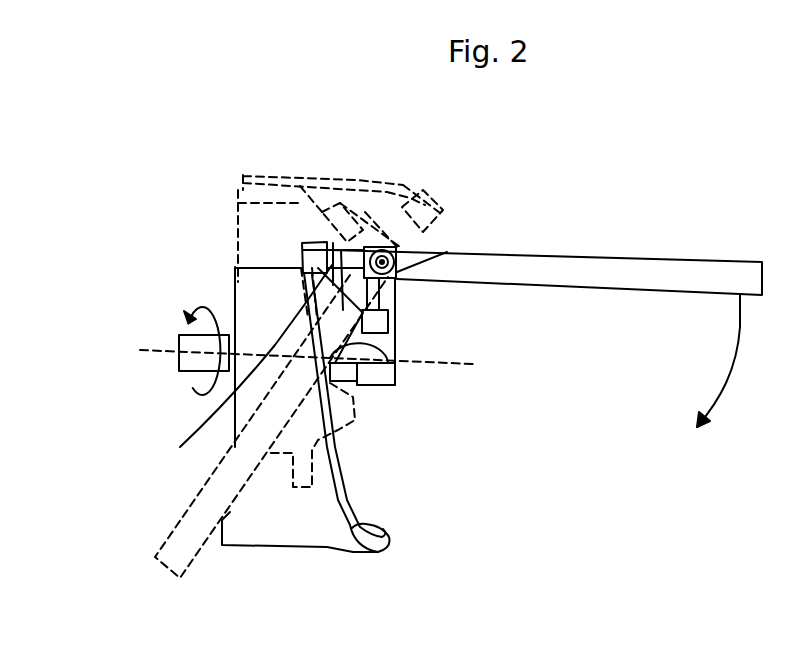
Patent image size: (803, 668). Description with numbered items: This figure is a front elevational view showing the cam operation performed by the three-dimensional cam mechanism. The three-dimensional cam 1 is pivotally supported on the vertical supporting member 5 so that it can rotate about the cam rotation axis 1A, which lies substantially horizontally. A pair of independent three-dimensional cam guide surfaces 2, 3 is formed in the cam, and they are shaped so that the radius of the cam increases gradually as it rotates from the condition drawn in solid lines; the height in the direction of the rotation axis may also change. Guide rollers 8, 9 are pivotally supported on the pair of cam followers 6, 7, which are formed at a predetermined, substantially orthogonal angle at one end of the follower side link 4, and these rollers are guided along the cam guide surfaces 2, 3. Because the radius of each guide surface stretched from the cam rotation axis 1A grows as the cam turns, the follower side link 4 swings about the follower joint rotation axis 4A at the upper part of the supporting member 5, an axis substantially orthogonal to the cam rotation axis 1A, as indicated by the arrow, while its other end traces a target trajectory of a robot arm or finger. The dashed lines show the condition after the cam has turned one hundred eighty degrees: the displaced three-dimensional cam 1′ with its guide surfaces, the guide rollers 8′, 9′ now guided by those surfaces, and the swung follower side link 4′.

The three-dimensional cam 1 is at (313, 527).
The three-dimensional cam 1′ is at (240, 219).
The cam rotation axis 1A is at (276, 351).
The cam guide surface 2 is at (218, 423).
The cam guide surface 3 is at (393, 380).
The follower side link 4 is at (572, 262).
The follower side link 4′ is at (238, 383).
The follower joint rotation axis 4A is at (403, 253).
The supporting member 5 is at (390, 343).
The cam follower 6 is at (320, 285).
The cam follower 7 is at (378, 298).
The guide roller 8 is at (302, 257).
The guide roller 8′ is at (433, 203).
The guide roller 9 is at (380, 315).
The guide roller 9′ is at (293, 177).